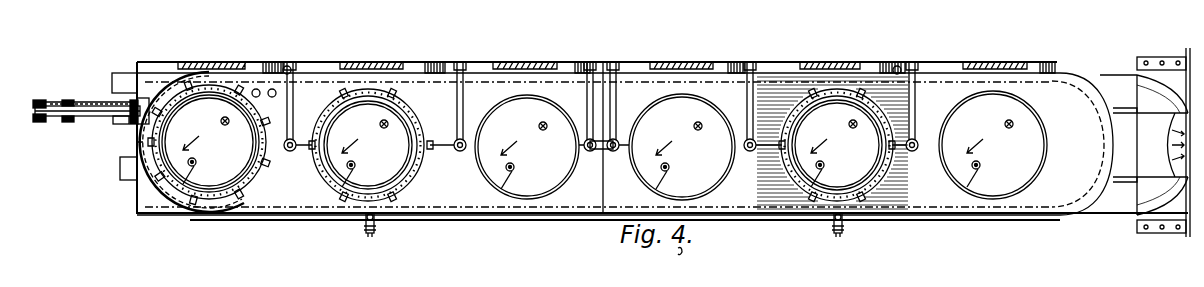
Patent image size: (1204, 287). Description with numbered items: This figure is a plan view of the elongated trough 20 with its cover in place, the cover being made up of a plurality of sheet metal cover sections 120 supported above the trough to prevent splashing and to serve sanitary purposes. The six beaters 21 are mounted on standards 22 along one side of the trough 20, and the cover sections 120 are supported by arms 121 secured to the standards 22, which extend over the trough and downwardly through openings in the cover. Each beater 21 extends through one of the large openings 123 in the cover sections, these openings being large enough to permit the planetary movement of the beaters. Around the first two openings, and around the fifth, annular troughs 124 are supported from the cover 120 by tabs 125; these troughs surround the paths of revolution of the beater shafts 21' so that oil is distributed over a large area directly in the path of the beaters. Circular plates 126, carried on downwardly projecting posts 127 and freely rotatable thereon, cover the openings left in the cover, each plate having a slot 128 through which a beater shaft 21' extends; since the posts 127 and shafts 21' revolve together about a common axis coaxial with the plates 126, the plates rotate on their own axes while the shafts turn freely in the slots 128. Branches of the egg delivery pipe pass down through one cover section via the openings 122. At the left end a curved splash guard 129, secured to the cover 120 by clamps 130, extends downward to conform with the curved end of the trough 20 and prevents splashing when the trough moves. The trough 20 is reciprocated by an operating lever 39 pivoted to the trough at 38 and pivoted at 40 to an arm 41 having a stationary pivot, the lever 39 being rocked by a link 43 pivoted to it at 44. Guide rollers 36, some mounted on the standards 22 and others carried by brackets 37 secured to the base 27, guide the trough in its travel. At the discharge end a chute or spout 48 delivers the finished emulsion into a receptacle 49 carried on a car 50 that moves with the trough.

The trough 20 is at (448, 213).
The beaters 21 is at (998, 156).
The beater shafts 21' is at (530, 160).
The standards 22 is at (995, 62).
The base 27 is at (138, 206).
The guide rollers 36 is at (834, 222).
The brackets 37 is at (843, 234).
The pivot 38 is at (136, 124).
The operating lever 39 is at (95, 106).
The pivot 40 is at (40, 100).
The arm 41 is at (80, 104).
The link 43 is at (114, 121).
The pivot 44 is at (68, 100).
The chute or spout 48 is at (1150, 175).
The receptacle 49 is at (1172, 188).
The car 50 is at (1166, 233).
The cover sections 120 is at (1085, 107).
The arms 121 is at (916, 92).
The openings 122 is at (258, 97).
The large openings 123 is at (1038, 182).
The annular troughs 124 is at (788, 165).
The tabs 125 is at (790, 188).
The circular plates 126 is at (595, 142).
The posts 127 is at (1005, 124).
The slots 128 is at (980, 168).
The splash guard 129 is at (216, 214).
The clamps 130 is at (190, 210).